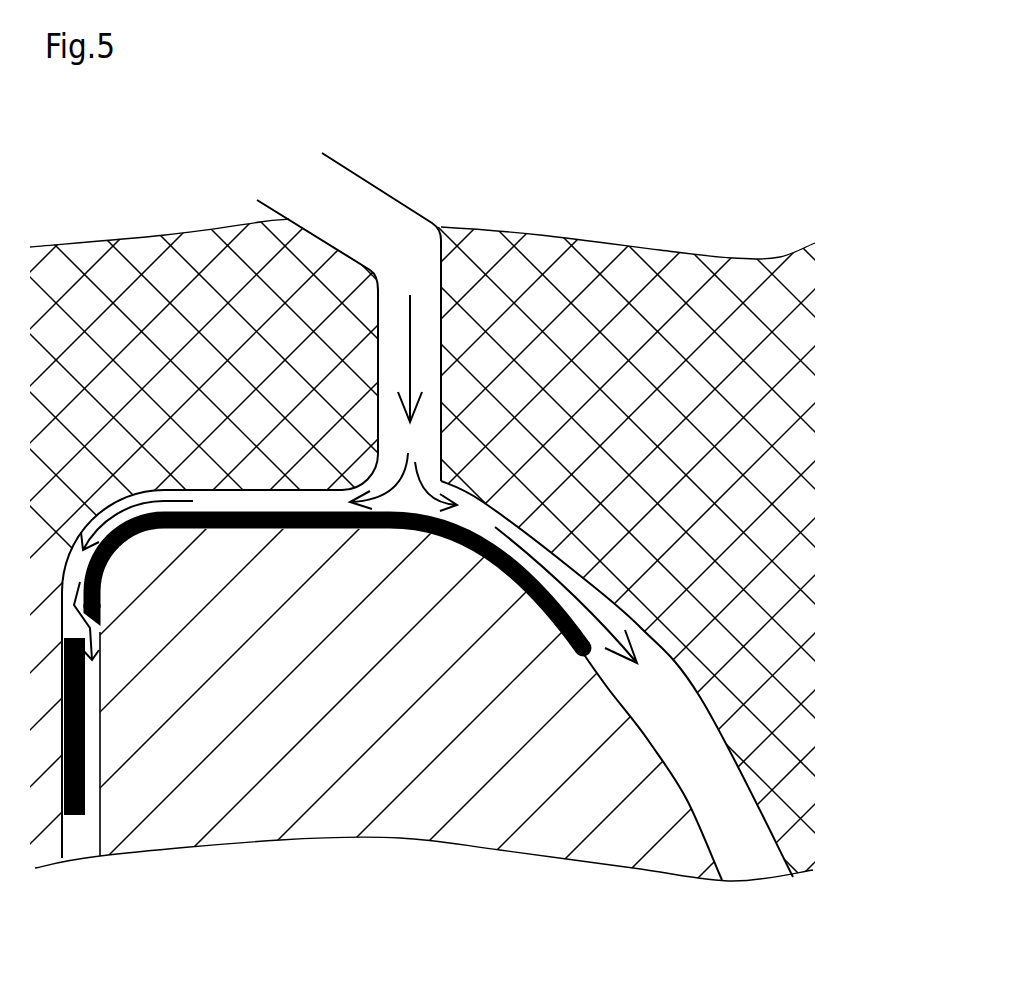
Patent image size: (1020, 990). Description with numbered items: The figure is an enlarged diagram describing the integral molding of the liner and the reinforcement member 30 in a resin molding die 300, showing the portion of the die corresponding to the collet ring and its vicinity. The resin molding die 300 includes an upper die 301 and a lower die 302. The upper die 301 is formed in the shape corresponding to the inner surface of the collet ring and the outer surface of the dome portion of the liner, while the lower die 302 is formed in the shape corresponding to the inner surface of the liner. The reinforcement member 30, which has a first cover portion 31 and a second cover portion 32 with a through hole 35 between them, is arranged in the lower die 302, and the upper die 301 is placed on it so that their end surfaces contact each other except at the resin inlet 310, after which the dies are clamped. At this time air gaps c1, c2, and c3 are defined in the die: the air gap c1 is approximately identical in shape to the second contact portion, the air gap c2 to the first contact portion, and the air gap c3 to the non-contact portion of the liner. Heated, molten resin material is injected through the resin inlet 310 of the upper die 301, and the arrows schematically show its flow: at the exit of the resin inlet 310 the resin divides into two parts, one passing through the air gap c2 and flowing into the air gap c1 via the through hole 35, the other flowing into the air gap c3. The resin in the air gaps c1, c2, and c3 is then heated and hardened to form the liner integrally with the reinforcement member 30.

The resin molding die 300 is at (90, 147).
The upper die 301 is at (627, 202).
The lower die 302 is at (557, 873).
The resin inlet 310 is at (298, 167).
The reinforcement member 30 is at (250, 917).
The first cover portion 31 is at (289, 530).
The second cover portion 32 is at (109, 652).
The through hole 35 is at (85, 717).
The air gap c1 is at (92, 770).
The air gap c2 is at (228, 505).
The air gap c3 is at (743, 847).